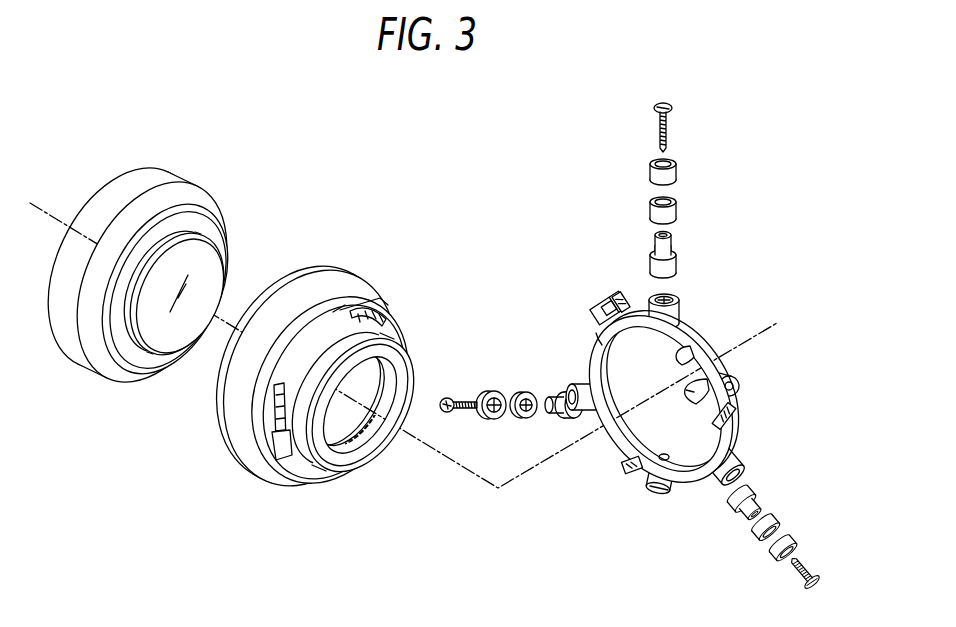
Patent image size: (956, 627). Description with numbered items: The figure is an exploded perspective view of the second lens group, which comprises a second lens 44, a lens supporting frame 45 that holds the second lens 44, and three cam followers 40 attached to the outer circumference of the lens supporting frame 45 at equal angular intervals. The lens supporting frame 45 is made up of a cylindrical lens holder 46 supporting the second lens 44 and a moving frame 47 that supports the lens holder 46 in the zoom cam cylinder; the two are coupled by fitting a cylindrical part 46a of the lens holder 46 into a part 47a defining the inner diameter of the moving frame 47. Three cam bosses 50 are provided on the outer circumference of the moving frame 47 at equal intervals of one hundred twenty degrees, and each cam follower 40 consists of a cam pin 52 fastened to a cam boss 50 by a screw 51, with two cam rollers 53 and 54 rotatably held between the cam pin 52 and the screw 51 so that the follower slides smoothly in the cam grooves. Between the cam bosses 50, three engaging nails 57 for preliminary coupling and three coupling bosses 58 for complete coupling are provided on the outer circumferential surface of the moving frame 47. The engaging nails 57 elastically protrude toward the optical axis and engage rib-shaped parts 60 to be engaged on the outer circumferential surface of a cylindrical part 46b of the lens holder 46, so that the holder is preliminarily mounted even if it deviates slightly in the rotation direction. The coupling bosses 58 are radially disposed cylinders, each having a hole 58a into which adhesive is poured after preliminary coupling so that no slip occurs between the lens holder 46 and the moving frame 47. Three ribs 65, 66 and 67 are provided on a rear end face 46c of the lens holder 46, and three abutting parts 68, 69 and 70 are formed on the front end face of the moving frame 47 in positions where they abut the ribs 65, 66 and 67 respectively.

The cam follower 40 is at (586, 385).
The second lens 44 is at (142, 168).
The lens supporting frame 45 is at (566, 245).
The lens holder 46 is at (322, 248).
The cylindrical part 46a is at (293, 440).
The cylindrical part 46b is at (275, 373).
The rear end face 46c is at (315, 333).
The moving frame 47 is at (588, 320).
The part defining the inner diameter 47a is at (696, 345).
The cam boss 50 is at (592, 412).
The screw 51 is at (672, 127).
The cam pin 52 is at (678, 248).
The cam roller 53 is at (678, 170).
The cam roller 54 is at (678, 210).
The engaging nail 57 is at (616, 294).
The coupling boss 58 is at (600, 298).
The hole 58a is at (735, 380).
The part to be engaged 60 is at (380, 300).
The rib 65 is at (388, 303).
The rib 66 is at (382, 448).
The rib 67 is at (290, 443).
The abutting part 68 is at (598, 338).
The abutting part 69 is at (660, 492).
The abutting part 70 is at (678, 385).